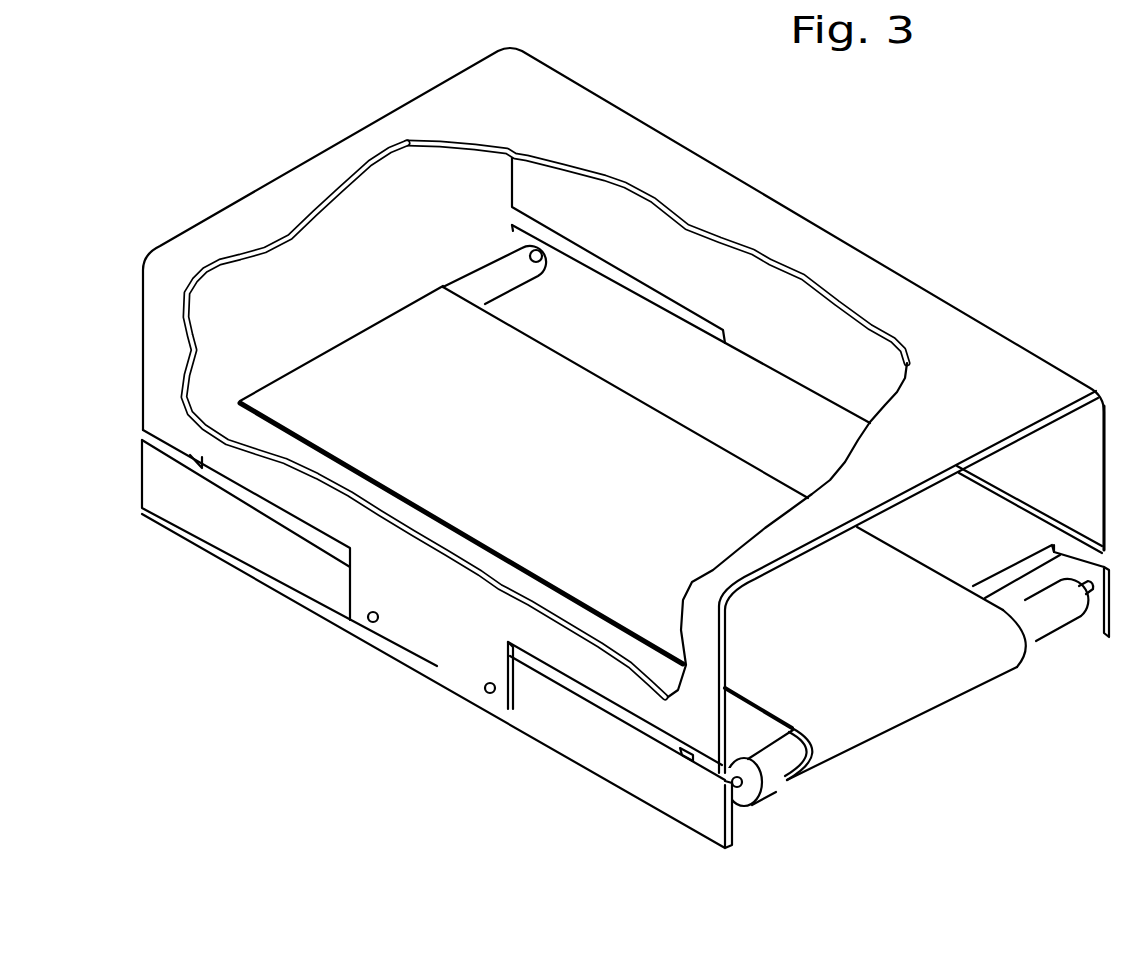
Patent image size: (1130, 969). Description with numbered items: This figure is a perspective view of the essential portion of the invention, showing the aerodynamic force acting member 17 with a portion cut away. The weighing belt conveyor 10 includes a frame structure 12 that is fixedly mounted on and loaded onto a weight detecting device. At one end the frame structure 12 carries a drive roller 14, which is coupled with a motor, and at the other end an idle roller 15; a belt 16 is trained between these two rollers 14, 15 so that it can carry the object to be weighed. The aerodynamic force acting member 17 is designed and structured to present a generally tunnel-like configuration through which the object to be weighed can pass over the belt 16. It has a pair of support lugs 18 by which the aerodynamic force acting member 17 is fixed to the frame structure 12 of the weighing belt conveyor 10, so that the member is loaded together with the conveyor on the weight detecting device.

The weighing belt conveyor 10 is at (955, 710).
The frame structure 12 is at (600, 758).
The drive roller 14 is at (773, 792).
The idle roller 15 is at (485, 272).
The belt 16 is at (408, 317).
The aerodynamic force acting member 17 is at (813, 233).
The support lugs 18 is at (357, 610).